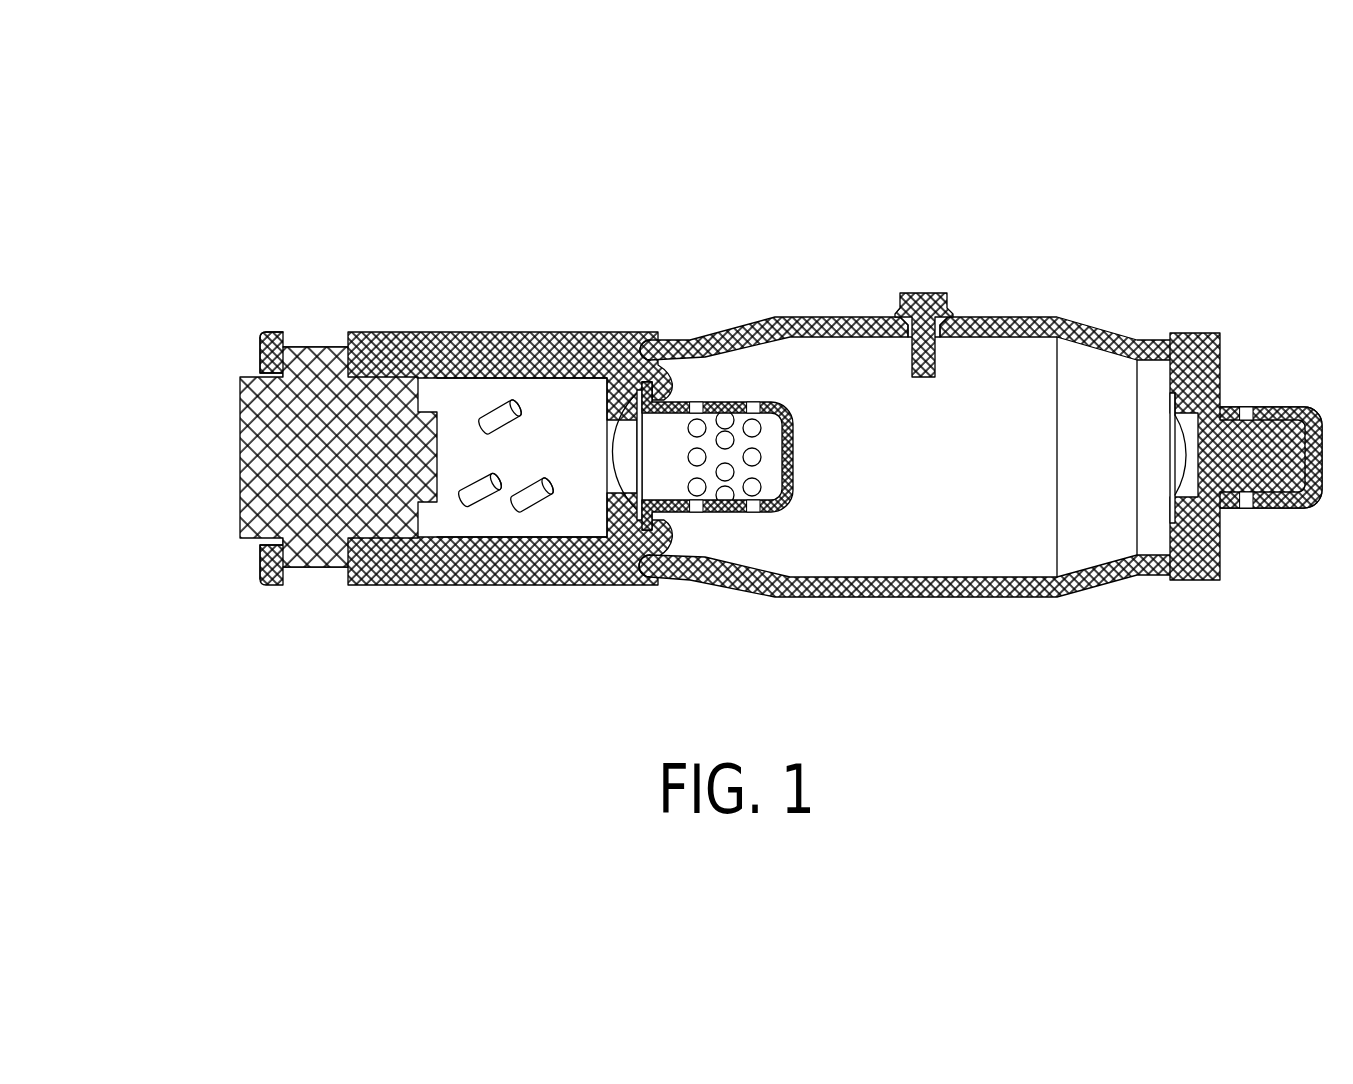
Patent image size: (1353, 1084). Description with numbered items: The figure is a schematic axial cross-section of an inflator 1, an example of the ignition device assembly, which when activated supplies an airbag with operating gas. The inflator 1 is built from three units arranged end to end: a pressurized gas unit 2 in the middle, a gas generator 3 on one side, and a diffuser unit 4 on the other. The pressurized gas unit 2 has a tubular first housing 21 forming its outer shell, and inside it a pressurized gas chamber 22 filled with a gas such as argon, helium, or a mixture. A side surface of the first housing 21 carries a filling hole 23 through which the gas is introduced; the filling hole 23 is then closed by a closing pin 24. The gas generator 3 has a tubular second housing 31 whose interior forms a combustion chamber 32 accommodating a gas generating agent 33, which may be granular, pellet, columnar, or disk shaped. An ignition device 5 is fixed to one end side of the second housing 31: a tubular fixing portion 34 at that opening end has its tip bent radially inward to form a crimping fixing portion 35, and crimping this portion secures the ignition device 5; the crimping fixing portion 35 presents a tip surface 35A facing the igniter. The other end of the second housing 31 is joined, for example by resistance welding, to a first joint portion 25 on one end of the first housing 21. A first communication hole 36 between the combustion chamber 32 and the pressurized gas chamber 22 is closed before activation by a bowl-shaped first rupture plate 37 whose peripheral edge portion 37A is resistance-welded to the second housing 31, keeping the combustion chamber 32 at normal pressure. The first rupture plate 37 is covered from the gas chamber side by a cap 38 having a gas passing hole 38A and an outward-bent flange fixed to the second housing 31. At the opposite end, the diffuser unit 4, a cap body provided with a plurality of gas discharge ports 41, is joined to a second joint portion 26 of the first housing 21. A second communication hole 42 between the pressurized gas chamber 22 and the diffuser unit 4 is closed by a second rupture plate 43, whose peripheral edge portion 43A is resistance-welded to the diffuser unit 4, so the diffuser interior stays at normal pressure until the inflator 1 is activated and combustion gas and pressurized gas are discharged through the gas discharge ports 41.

The inflator 1 is at (734, 374).
The pressurized gas unit 2 is at (911, 400).
The gas generator 3 is at (409, 429).
The diffuser unit 4 is at (1227, 433).
The ignition device 5 is at (322, 497).
The first housing 21 is at (1013, 317).
The pressurized gas chamber 22 is at (983, 536).
The filling hole 23 is at (930, 337).
The closing pin 24 is at (912, 378).
The first joint portion 25 is at (650, 333).
The second joint portion 26 is at (1187, 577).
The second housing 31 is at (512, 352).
The combustion chamber 32 is at (568, 438).
The gas generating agent 33 is at (480, 497).
The tubular fixing portion 34 is at (305, 343).
The crimping fixing portion 35 is at (262, 362).
The tip surface 35A is at (277, 545).
The first communication hole 36 is at (608, 425).
The first rupture plate 37 is at (638, 495).
The peripheral edge portion 37A is at (648, 528).
The cap 38 is at (756, 510).
The gas passing hole 38A is at (750, 507).
The gas discharge port 41 is at (1245, 510).
The second communication hole 42 is at (1183, 472).
The second rupture plate 43 is at (1203, 470).
The peripheral edge portion 43A is at (1173, 393).